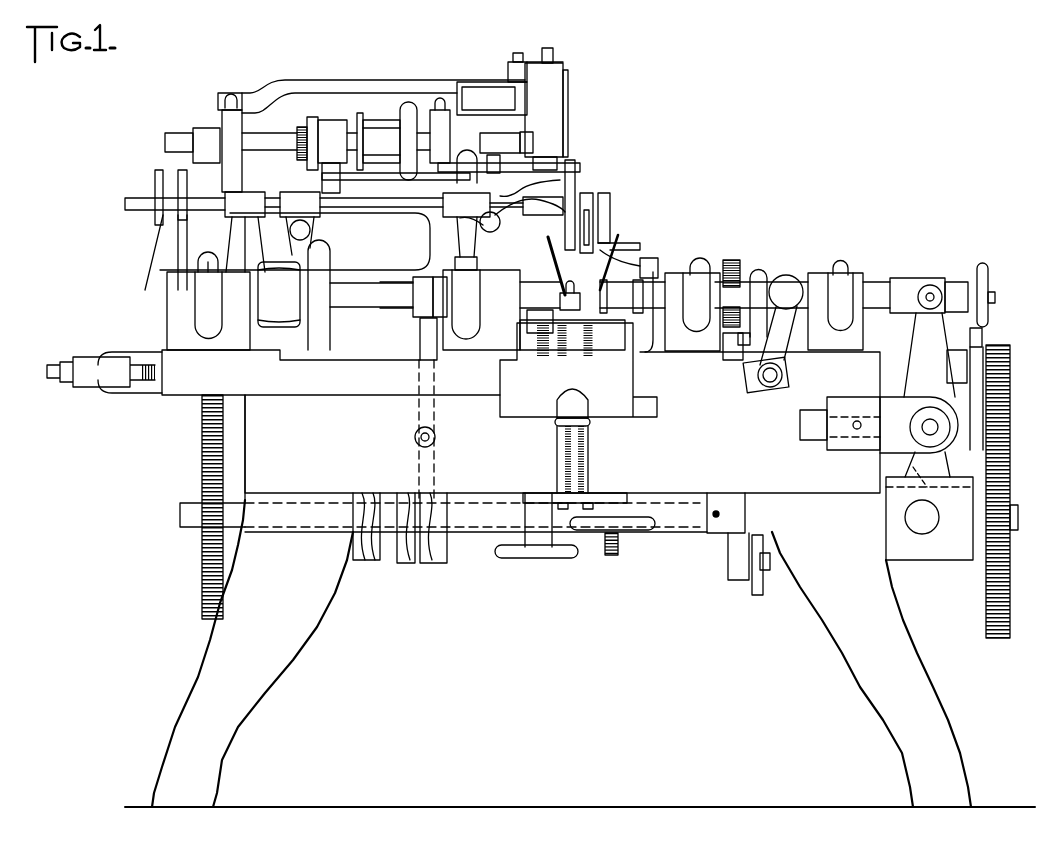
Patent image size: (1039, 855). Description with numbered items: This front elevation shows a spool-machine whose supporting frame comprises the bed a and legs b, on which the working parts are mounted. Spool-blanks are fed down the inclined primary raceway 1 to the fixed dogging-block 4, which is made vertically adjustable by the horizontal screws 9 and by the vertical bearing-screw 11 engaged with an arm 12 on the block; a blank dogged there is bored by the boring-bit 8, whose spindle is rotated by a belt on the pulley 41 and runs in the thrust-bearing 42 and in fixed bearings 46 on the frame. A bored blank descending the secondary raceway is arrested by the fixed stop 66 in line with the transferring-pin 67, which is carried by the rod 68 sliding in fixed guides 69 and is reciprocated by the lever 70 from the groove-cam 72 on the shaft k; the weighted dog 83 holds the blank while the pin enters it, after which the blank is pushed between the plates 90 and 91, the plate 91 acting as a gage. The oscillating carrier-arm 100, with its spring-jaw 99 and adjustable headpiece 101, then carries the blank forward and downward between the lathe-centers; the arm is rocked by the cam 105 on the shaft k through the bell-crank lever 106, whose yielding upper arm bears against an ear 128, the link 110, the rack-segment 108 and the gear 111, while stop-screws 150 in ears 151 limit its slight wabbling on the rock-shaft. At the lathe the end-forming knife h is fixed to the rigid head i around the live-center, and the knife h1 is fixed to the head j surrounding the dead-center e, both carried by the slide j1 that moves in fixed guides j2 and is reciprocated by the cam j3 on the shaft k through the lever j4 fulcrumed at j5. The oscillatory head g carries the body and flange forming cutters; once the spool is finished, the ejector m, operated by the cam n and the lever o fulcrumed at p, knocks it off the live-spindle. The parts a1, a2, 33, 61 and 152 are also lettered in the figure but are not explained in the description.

The primary raceway 1 is at (570, 138).
The fixed dogging-block 4 is at (553, 128).
The boring-bit 8 is at (527, 135).
The horizontal screws 9 is at (565, 98).
The vertical bearing-screw 11 is at (512, 56).
The arm on the dogging-block 12 is at (507, 70).
The bolt 33 is at (554, 52).
The pulley 41 is at (380, 127).
The thrust-bearing 42 is at (330, 127).
The fixed bearings 46 is at (495, 142).
The yoke block 61 is at (452, 196).
The fixed stop 66 is at (535, 203).
The transferring-pin 67 is at (506, 203).
The cylindrical slide or rod 68 is at (376, 207).
The fixed guides 69 is at (250, 192).
The lever 70 is at (312, 232).
The groove-cam 72 is at (378, 565).
The weighted dog 83 is at (572, 200).
The plate 90 is at (590, 200).
The plate 91 is at (600, 215).
The spring-jaw 99 is at (618, 230).
The oscillating carrier-arm 100 is at (600, 225).
The headpiece 101 is at (577, 190).
The cam 105 is at (740, 575).
The bell-crank lever 106 is at (765, 542).
The rack-segment 108 is at (723, 340).
The link 110 is at (743, 350).
The gear 111 is at (735, 262).
The ear 128 is at (768, 585).
The stop-screws 150 is at (645, 258).
The ears 151 is at (648, 262).
The link 152 is at (625, 250).
The bed a is at (463, 396).
The body a' a1 is at (376, 272).
The bobbin a2 is at (277, 270).
The legs b is at (561, 601).
The dead-center e is at (652, 401).
The oscillatory head or holder g is at (612, 335).
The end-forming knife h is at (548, 238).
The end-forming knife h1 is at (620, 238).
The head i is at (537, 305).
The head j is at (690, 275).
The slide j1 is at (875, 280).
The fixed guides j2 is at (720, 272).
The cam j3 is at (928, 560).
The lever j4 is at (920, 365).
The fulcrum j5 is at (925, 430).
The shaft k is at (682, 520).
The ejector m is at (508, 330).
The cam n is at (430, 565).
The lever o is at (420, 344).
The fulcrum p is at (436, 438).